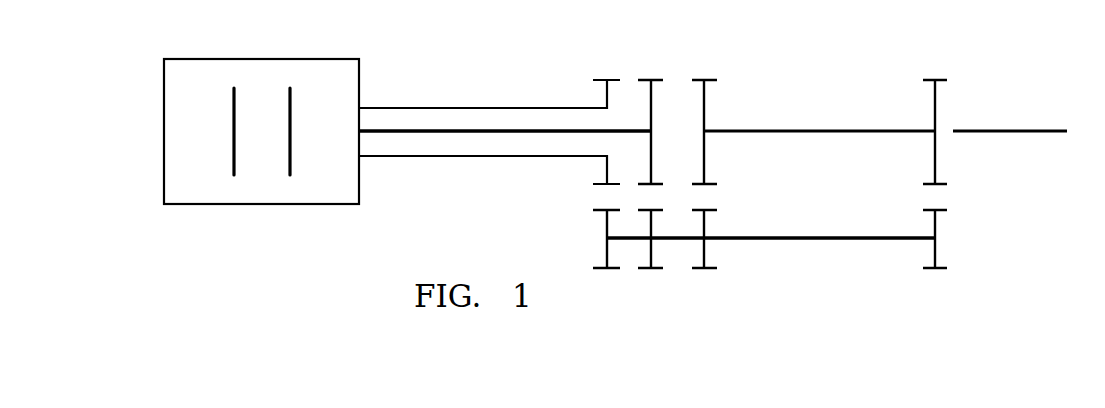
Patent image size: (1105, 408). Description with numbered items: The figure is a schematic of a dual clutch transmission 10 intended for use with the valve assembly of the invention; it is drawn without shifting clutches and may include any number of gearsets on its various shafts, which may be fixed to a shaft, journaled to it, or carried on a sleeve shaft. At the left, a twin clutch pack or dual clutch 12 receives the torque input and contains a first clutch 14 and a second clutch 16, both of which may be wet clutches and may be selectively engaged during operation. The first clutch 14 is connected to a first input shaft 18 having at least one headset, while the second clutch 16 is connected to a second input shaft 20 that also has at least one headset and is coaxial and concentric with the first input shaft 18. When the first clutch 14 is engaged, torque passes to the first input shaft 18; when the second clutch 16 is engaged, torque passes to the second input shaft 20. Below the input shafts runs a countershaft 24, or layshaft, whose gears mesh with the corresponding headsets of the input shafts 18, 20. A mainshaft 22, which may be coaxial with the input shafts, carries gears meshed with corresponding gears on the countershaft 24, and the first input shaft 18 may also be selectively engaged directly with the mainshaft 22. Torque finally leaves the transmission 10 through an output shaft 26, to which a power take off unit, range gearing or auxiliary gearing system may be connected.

The dual clutch transmission 10 is at (218, 320).
The dual clutch 12 is at (292, 204).
The first clutch 14 is at (234, 153).
The second clutch 16 is at (290, 153).
The first input shaft 18 is at (426, 134).
The second input shaft 20 is at (468, 106).
The mainshaft 22 is at (823, 129).
The countershaft 24 is at (807, 242).
The output shaft 26 is at (1033, 129).